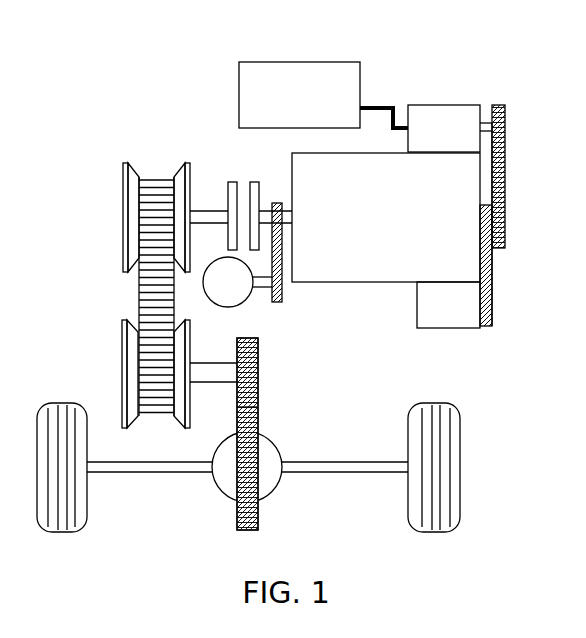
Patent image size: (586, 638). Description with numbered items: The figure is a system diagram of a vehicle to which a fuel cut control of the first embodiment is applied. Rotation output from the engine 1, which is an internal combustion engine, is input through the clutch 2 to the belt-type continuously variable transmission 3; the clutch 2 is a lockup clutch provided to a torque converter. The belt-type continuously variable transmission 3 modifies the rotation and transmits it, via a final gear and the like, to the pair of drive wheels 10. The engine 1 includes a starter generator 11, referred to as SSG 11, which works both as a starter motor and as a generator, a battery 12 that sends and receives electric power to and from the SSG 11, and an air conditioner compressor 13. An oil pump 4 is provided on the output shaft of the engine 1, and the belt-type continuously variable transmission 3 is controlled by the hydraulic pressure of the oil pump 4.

The engine 1 is at (350, 283).
The clutch 2 is at (240, 176).
The belt-type continuously variable transmission 3 is at (133, 141).
The oil pump 4 is at (250, 297).
The drive wheels 10 is at (50, 403).
The starter generator (SSG) 11 is at (460, 105).
The battery 12 is at (305, 62).
The air conditioner compressor 13 is at (444, 317).